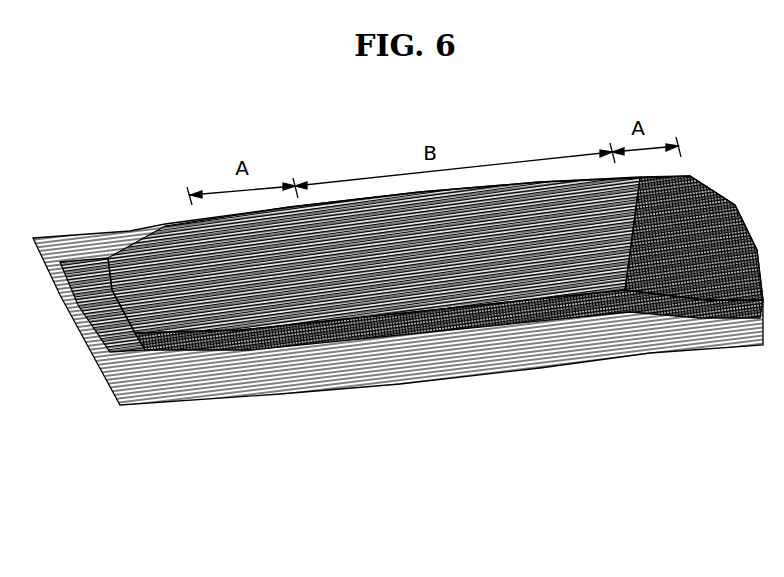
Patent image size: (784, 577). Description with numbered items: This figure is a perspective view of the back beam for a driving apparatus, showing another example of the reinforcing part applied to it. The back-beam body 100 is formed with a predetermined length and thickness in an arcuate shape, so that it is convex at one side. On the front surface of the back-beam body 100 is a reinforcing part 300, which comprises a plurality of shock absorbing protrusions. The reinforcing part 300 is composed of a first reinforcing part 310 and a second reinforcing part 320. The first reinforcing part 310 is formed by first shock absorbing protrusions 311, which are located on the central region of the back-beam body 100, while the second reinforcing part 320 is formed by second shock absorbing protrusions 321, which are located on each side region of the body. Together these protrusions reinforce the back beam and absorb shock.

The back-beam body 100 is at (490, 357).
The reinforcing part 300 is at (411, 360).
The first reinforcing part 310 is at (190, 482).
The first shock absorbing protrusions 311 is at (380, 340).
The second reinforcing part 320 is at (218, 340).
The second shock absorbing protrusions 321 is at (260, 345).